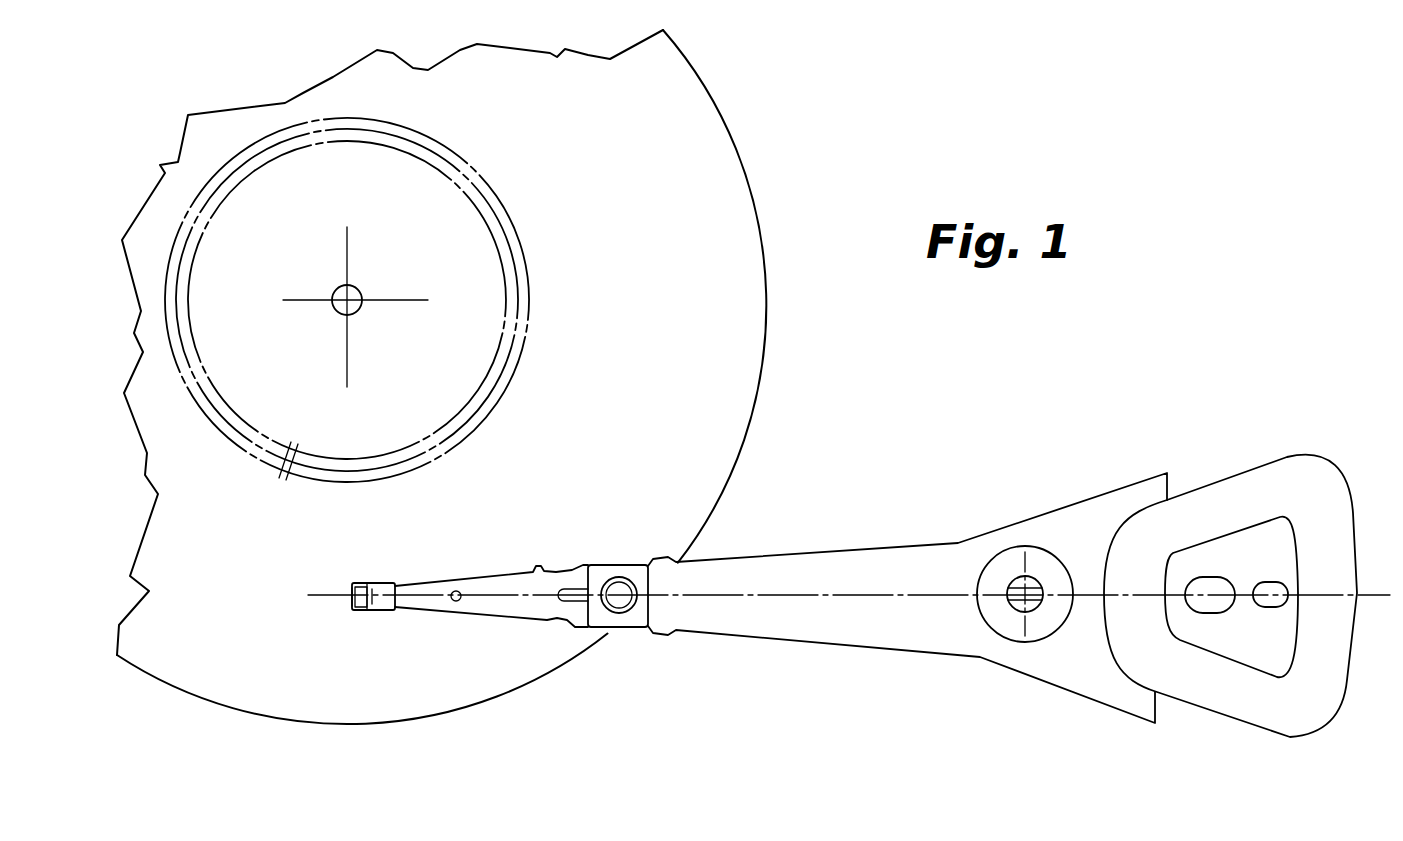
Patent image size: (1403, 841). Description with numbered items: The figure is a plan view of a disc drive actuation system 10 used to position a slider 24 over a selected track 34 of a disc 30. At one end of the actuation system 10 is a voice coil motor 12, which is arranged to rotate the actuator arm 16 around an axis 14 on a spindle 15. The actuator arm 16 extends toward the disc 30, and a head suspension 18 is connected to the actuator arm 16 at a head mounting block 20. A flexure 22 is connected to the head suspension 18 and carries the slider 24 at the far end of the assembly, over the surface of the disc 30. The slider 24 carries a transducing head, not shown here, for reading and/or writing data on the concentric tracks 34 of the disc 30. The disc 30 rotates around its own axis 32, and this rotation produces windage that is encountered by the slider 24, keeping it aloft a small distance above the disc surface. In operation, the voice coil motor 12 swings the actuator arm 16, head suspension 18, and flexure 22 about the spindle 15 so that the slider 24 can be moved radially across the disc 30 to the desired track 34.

The disc drive actuation system 10 is at (913, 432).
The voice coil motor 12 is at (1317, 453).
The axis 14 is at (1013, 605).
The spindle 15 is at (1033, 577).
The actuator arm 16 is at (778, 553).
The head suspension 18 is at (478, 573).
The head mounting block 20 is at (620, 565).
The flexure 22 is at (370, 583).
The slider 24 is at (350, 599).
The disc 30 is at (753, 413).
The axis 32 is at (357, 284).
The track 34 is at (282, 482).